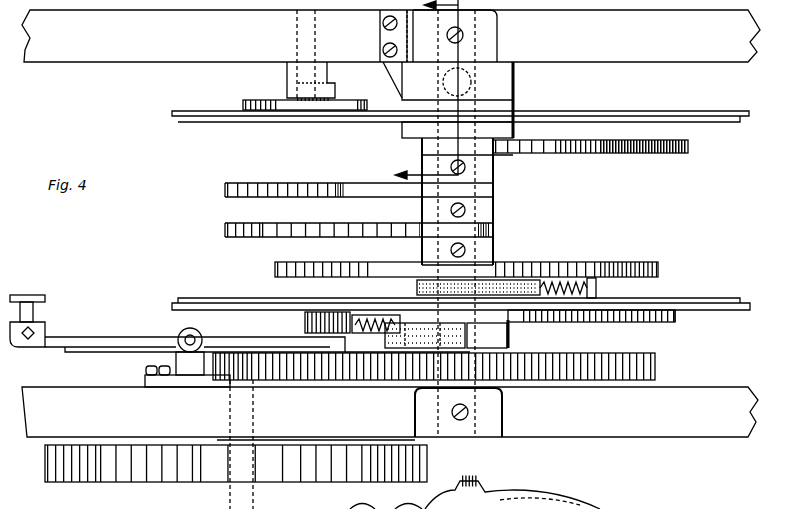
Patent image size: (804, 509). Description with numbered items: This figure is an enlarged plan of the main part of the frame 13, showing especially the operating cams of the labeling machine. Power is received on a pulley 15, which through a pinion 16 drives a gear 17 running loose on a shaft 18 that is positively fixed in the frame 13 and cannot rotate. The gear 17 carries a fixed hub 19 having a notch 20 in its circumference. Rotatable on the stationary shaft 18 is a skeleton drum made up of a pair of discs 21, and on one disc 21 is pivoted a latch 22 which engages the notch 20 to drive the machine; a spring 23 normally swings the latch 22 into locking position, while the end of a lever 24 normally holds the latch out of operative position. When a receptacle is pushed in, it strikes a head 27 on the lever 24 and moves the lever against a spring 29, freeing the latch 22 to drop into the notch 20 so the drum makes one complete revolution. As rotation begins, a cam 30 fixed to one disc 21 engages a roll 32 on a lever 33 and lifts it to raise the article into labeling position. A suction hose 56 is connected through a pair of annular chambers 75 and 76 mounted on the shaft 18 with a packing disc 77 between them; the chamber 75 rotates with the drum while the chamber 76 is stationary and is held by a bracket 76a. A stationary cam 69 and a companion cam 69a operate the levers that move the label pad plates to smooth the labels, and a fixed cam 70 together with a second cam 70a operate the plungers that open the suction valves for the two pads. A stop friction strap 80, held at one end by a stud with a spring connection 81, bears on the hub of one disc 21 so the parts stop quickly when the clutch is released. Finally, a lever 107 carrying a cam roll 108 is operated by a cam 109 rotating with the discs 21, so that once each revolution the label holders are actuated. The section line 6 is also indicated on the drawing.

The section line 6- 6 is at (416, 92).
The frame 13 is at (391, 223).
The pulley 15 is at (147, 482).
The pinion 16 is at (259, 380).
The gear 17 is at (581, 322).
The shaft 18 is at (478, 211).
The hub 19 is at (509, 338).
The notch 20 is at (487, 335).
The discs 21 is at (726, 121).
The latch 22 is at (428, 346).
The spring 23 is at (371, 317).
The lever 24 is at (105, 353).
The head 27 is at (40, 293).
The spring 29 is at (185, 330).
The cam 30 is at (666, 322).
The roll 32 is at (331, 312).
The lever 33 is at (133, 337).
The suction hose 56 is at (503, 56).
The stationary cam 69 is at (668, 151).
The companion cam 69a is at (641, 264).
The cam 70 is at (283, 229).
The second cam 70a is at (283, 190).
The annular chamber 75 is at (505, 131).
The annular chamber 76 is at (520, 61).
The bracket 76a is at (385, 37).
The packing disc 77 is at (516, 70).
The stop friction strap 80 is at (500, 268).
The spring connection 81 is at (561, 279).
The lever 107 is at (287, 73).
The cam roll 108 is at (352, 83).
The cam 109 is at (352, 106).